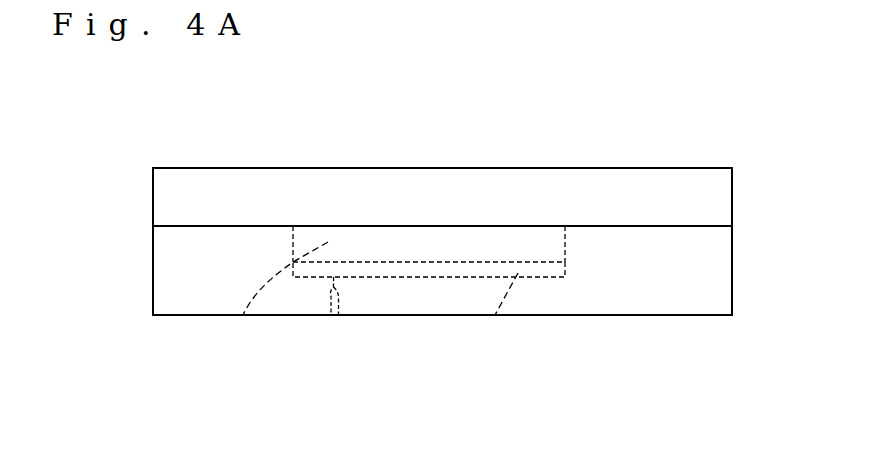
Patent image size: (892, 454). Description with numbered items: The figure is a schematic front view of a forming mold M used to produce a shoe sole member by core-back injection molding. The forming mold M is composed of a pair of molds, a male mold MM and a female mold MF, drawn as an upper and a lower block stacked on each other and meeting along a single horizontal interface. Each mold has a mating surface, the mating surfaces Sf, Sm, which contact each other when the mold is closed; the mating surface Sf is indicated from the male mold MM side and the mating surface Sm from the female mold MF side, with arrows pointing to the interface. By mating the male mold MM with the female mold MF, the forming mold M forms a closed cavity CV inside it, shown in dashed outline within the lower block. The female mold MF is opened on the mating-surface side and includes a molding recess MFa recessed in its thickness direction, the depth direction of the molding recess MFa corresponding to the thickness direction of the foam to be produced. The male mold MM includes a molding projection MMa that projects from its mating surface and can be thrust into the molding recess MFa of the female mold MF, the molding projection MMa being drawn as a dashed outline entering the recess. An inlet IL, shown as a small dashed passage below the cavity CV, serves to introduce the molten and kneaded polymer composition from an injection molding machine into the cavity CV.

The forming mold M is at (151, 96).
The male mold MM is at (732, 198).
The female mold MF is at (732, 277).
The molding projection MMa is at (243, 315).
The inlet IL is at (333, 315).
The cavity CV is at (400, 272).
The molding recess MFa is at (495, 315).
The mating surface Sf is at (615, 223).
The mating surface Sm is at (627, 229).